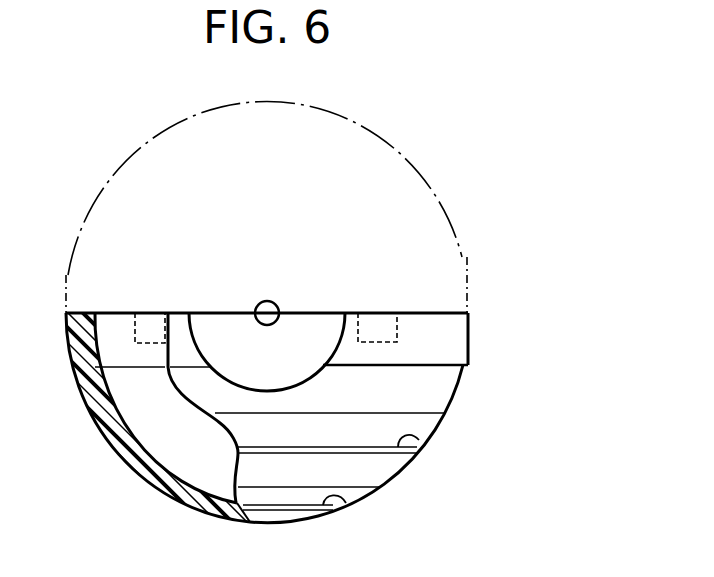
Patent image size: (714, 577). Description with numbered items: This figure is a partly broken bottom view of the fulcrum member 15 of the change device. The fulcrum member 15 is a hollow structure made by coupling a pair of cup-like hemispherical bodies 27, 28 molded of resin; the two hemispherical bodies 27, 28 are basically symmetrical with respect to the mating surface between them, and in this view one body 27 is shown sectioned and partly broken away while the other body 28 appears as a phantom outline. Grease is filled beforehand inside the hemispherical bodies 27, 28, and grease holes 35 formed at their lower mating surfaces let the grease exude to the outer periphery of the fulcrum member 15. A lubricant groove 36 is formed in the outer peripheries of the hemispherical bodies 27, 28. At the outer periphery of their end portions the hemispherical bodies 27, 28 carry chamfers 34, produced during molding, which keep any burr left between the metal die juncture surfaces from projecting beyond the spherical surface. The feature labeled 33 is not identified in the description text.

The fulcrum member 15 is at (549, 265).
The hemispherical body 27 is at (453, 393).
The hemispherical body 28 is at (463, 258).
The recess 33 is at (151, 318).
The chamfer 34 is at (434, 330).
The grease hole 35 is at (268, 306).
The lubricant groove 36 is at (340, 502).